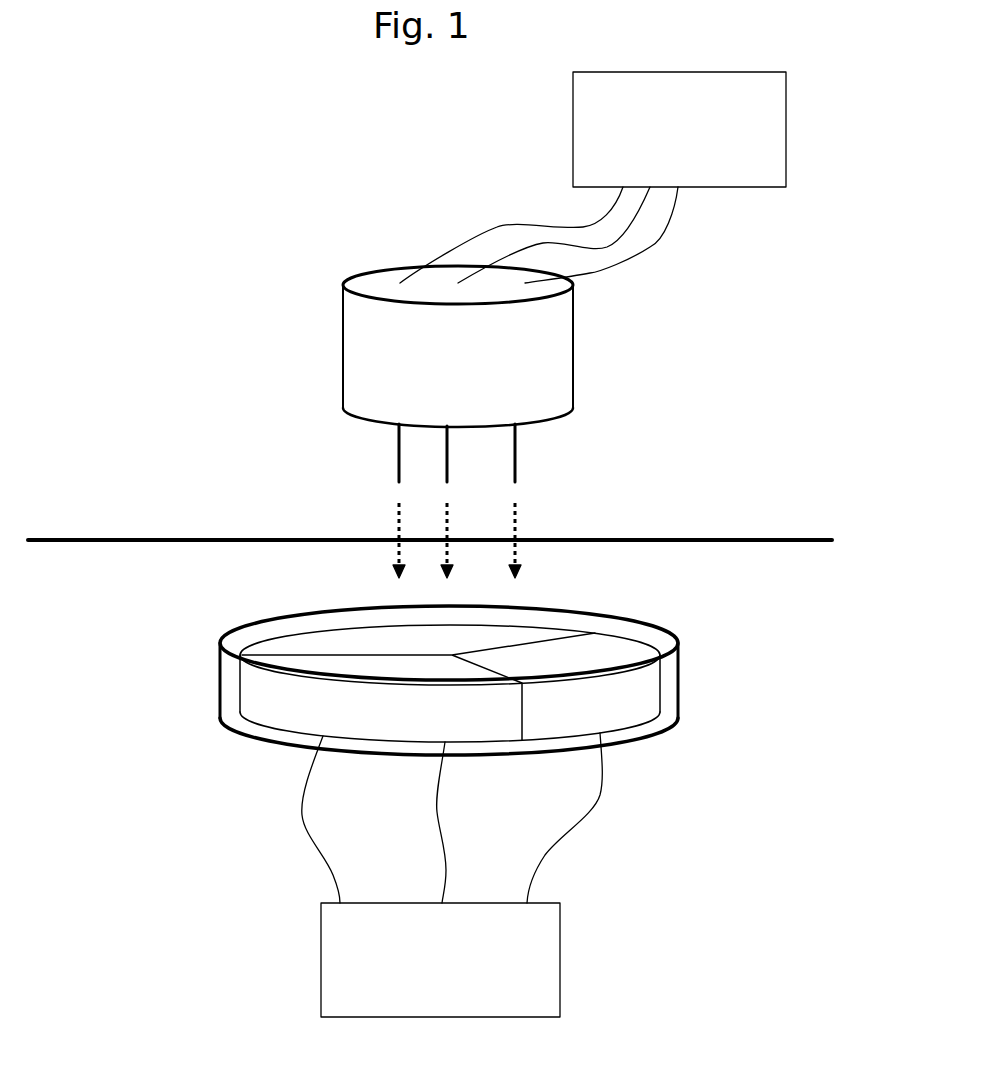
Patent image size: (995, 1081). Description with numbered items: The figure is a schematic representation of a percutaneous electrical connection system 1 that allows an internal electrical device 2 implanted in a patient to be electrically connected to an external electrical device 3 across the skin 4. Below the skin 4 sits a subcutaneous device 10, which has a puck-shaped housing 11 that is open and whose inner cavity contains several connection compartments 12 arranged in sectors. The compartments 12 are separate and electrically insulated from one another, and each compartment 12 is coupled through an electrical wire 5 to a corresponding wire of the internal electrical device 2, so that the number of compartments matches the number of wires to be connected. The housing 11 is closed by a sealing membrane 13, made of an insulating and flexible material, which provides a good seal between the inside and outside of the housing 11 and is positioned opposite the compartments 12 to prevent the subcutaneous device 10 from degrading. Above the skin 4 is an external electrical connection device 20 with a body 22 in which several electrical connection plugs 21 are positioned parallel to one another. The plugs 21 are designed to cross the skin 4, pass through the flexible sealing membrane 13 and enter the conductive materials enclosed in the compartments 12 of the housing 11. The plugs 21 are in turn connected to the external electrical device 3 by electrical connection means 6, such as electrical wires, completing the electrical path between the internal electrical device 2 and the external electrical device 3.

The percutaneous electrical connection system 1 is at (183, 224).
The internal electrical device 2 is at (561, 970).
The external electrical device 3 is at (786, 138).
The skin 4 is at (767, 537).
The electrical wire 5 is at (435, 817).
The electrical connection means 6 is at (660, 235).
The subcutaneous device 10 is at (190, 636).
The housing 11 is at (218, 692).
The connection compartment 12 is at (618, 702).
The sealing membrane 13 is at (640, 635).
The external electrical connection device 20 is at (278, 369).
The electrical connection plugs 21 is at (525, 463).
The body 22 is at (545, 350).